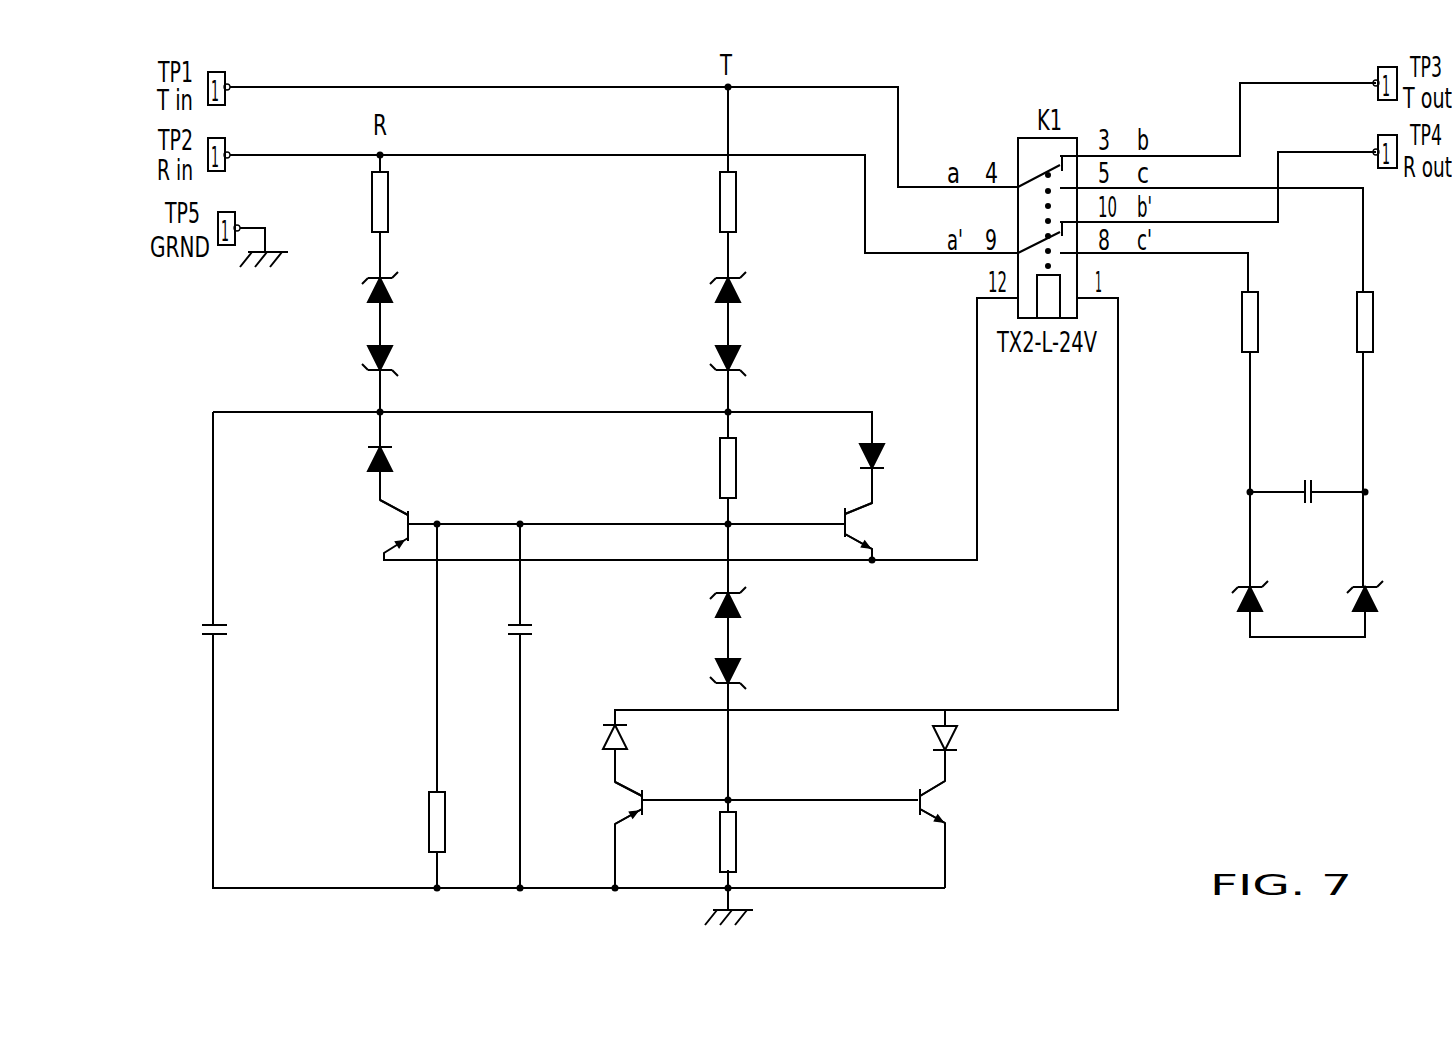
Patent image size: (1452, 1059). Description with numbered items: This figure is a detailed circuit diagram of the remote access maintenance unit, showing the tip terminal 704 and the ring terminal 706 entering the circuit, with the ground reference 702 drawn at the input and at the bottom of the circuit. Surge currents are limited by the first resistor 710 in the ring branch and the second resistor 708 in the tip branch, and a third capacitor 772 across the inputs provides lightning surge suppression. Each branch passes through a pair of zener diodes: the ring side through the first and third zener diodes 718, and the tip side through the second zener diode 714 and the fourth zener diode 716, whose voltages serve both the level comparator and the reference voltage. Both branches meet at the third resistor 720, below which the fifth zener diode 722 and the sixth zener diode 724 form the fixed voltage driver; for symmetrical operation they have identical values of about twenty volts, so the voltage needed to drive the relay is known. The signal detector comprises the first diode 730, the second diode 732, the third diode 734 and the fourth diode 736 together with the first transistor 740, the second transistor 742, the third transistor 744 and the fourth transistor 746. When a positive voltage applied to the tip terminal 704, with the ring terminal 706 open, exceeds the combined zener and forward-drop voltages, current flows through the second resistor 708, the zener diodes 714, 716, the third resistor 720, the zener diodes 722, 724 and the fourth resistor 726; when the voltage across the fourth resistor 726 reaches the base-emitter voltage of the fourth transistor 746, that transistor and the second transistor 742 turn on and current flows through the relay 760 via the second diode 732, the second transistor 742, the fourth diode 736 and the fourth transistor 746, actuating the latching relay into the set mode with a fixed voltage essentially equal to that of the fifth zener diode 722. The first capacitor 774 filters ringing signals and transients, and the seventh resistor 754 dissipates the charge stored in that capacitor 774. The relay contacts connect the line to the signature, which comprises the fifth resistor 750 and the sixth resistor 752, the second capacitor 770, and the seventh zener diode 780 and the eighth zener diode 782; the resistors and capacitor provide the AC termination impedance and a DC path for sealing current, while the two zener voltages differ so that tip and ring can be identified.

The ground 702 is at (272, 258).
The T 704 is at (730, 90).
The R 706 is at (383, 154).
The resistor R2 708 is at (720, 208).
The resistor R1 710 is at (372, 208).
The zener diode Z2 714 is at (718, 300).
The zener diode Z4 716 is at (718, 358).
The zener diode Z3 718 is at (370, 300).
The resistor R3 720 is at (720, 470).
The zener diode Z5 722 is at (718, 612).
The zener diode Z6 724 is at (718, 674).
The resistor R4 726 is at (720, 856).
The diode D1 730 is at (370, 470).
The diode D2 732 is at (876, 447).
The diode D3 734 is at (606, 735).
The diode D4 736 is at (960, 733).
The transistor Q1 740 is at (412, 514).
The transistor Q2 742 is at (842, 532).
The transistor Q3 744 is at (646, 812).
The transistor Q4 746 is at (918, 810).
The resistor R5 750 is at (1258, 295).
The resistor R6 752 is at (1373, 295).
The resistor R7 754 is at (429, 825).
The relay K1 760 is at (1018, 150).
The capacitor C2 770 is at (1313, 505).
The capacitor C3 772 is at (228, 630).
The capacitor C1 774 is at (535, 630).
The zener diode Z7 780 is at (1247, 592).
The zener diode Z8 782 is at (1368, 592).